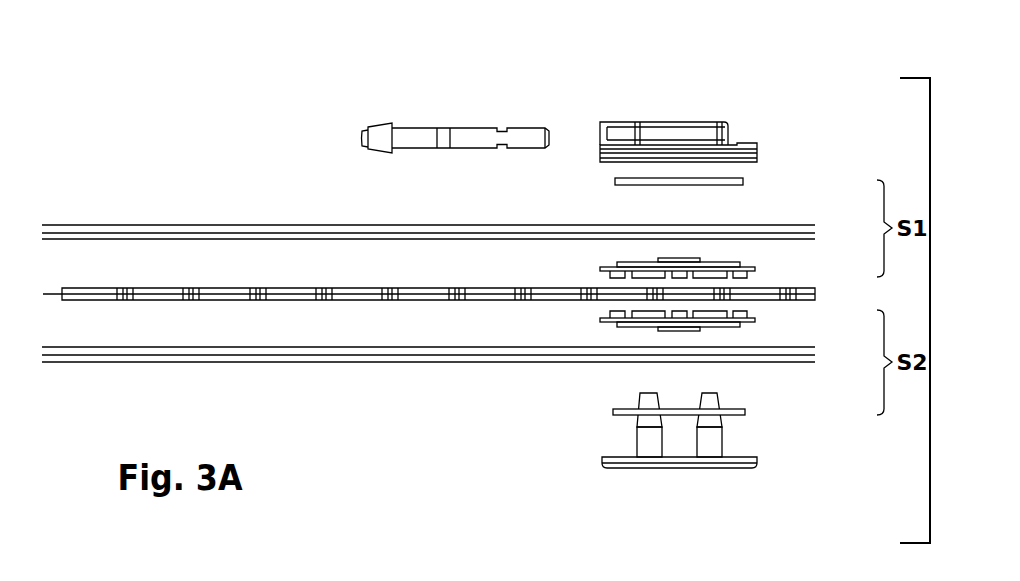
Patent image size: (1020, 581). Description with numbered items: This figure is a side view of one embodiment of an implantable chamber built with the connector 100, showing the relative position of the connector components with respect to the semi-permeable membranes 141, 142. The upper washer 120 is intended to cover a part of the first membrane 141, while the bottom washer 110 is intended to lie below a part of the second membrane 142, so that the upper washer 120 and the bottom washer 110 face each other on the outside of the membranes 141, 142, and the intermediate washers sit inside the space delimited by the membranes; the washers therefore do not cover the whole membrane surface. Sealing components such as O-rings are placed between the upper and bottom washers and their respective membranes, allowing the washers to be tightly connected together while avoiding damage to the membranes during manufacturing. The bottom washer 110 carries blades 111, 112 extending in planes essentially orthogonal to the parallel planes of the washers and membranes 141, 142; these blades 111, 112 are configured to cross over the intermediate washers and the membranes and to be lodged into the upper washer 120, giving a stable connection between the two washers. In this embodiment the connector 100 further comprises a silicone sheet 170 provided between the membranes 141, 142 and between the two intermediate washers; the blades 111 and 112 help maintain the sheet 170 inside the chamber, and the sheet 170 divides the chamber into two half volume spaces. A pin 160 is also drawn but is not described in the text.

The connector 100 is at (934, 61).
The bottom washer 110 is at (710, 463).
The blade 111 is at (712, 442).
The blade 112 is at (643, 438).
The upper washer 120 is at (737, 143).
The first semi-permeable membrane 141 is at (763, 228).
The second semi-permeable membrane 142 is at (775, 353).
The pin 160 is at (478, 140).
The sheet 170 is at (590, 288).